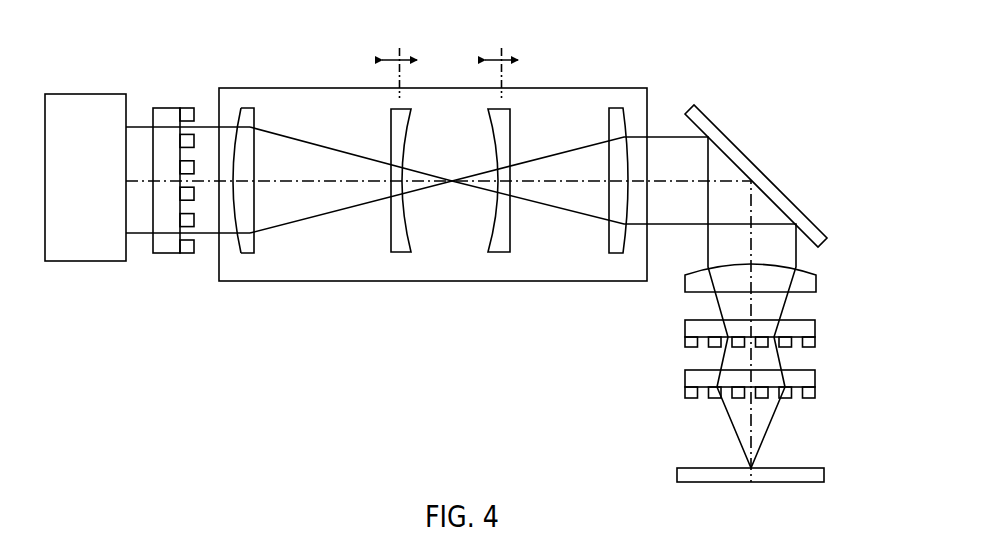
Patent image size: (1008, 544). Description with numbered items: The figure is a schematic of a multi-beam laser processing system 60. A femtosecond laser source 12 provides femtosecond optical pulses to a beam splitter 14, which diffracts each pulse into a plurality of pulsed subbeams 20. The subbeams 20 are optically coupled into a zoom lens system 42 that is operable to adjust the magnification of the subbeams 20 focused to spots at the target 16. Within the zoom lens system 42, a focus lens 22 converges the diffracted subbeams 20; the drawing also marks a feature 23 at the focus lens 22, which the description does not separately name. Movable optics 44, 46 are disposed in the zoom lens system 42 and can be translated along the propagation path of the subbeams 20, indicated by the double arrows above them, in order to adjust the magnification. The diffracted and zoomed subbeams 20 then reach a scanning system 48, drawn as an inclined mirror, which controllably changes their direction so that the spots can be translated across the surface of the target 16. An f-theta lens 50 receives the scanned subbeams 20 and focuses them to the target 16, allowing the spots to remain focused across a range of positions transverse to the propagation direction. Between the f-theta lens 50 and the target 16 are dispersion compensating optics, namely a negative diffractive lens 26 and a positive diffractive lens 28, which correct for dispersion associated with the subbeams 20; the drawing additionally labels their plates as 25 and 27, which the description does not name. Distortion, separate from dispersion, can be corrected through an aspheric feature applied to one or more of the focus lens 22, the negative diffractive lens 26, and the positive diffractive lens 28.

The femtosecond laser source 12 is at (77, 213).
The beam splitter 14 is at (163, 120).
The target 16 is at (700, 468).
The pulsed subbeams 20 is at (200, 143).
The focus lens 22 is at (247, 118).
The curved lens surface 23 is at (240, 250).
The first lens array plate 25 is at (808, 320).
The negative diffractive lens 26 is at (697, 329).
The second lens array plate 27 is at (808, 370).
The positive diffractive lens 28 is at (697, 379).
The zoom lens system 42 is at (431, 88).
The movable optics 44 is at (397, 122).
The movable optics 46 is at (505, 120).
The scanning system 48 is at (742, 168).
The f-theta lens 50 is at (692, 281).
The multi-beam laser processing system 60 is at (202, 396).